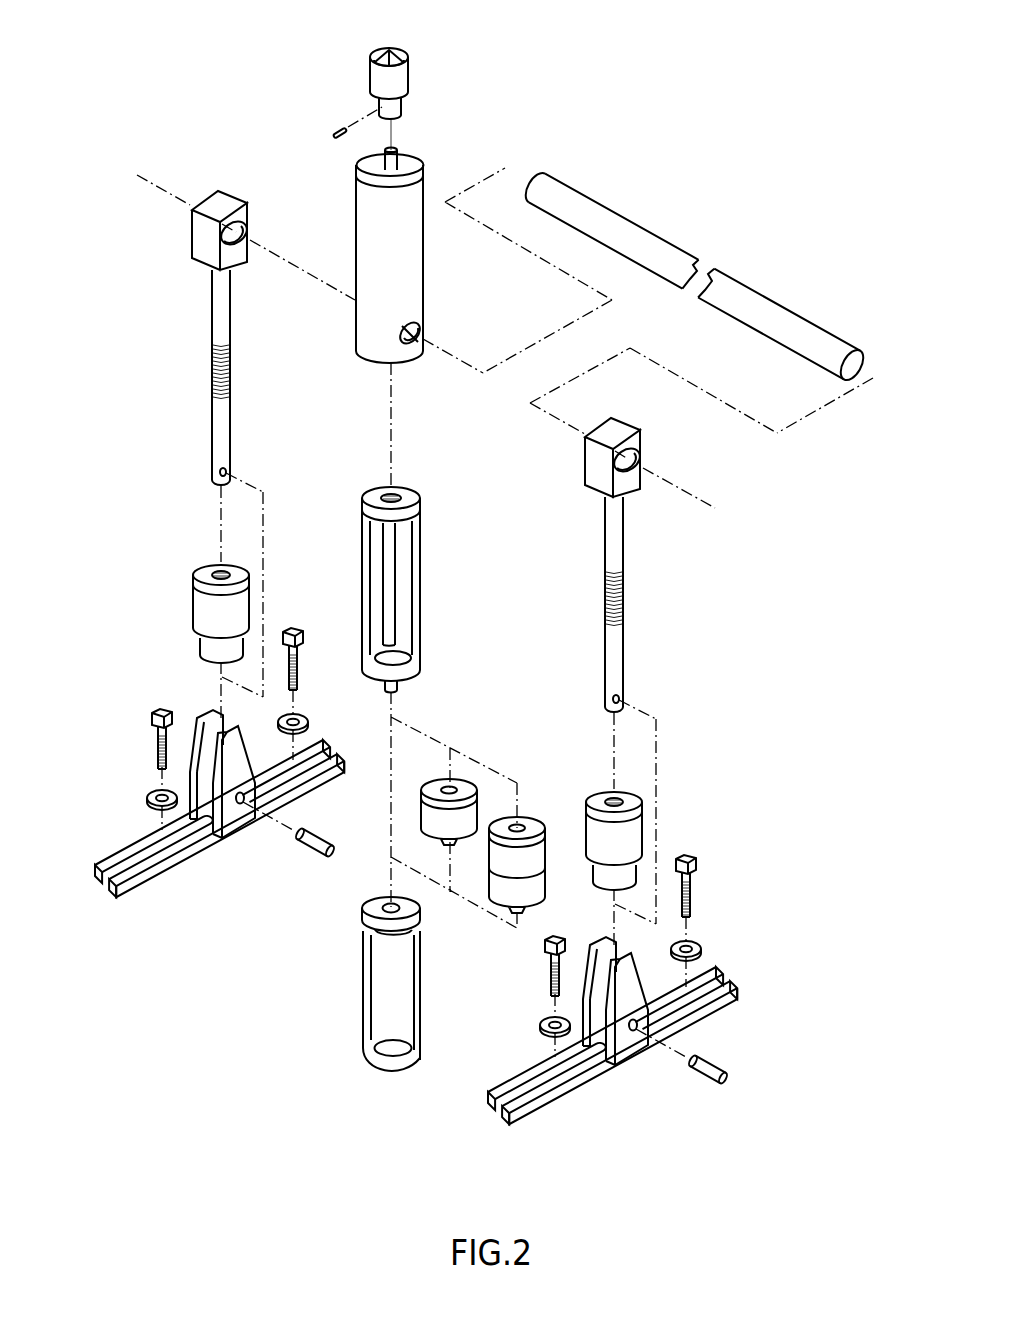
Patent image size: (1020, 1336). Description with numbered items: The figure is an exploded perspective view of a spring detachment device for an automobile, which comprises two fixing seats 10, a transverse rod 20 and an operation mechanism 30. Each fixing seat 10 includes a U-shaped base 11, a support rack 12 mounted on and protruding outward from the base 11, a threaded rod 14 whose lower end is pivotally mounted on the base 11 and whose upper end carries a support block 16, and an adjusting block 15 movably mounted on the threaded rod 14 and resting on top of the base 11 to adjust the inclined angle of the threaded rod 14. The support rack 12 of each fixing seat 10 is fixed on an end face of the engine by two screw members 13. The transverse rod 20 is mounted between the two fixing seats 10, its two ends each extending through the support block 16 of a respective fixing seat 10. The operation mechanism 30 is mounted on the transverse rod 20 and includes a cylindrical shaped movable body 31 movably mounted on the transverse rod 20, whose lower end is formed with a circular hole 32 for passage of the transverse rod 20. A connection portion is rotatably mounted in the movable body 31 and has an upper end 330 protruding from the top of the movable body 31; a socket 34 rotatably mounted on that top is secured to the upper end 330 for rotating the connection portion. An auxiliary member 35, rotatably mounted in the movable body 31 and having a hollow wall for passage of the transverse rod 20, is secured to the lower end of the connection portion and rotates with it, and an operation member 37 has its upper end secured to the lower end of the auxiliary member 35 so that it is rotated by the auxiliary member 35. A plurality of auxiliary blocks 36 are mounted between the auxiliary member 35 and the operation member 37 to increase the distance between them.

The fixing seat 10 is at (198, 887).
The U-shaped base 11 is at (232, 826).
The support rack 12 is at (120, 897).
The screw member 13 is at (293, 632).
The threaded rod 14 is at (212, 447).
The adjusting block 15 is at (194, 614).
The support block 16 is at (200, 232).
The transverse rod 20 is at (612, 213).
The operation mechanism 30 is at (490, 86).
The movable body 31 is at (370, 228).
The circular hole 32 is at (425, 340).
The upper end of the connection portion 330 is at (383, 160).
The socket 34 is at (371, 78).
The auxiliary member 35 is at (421, 508).
The auxiliary block 36 is at (457, 780).
The operation member 37 is at (416, 1000).